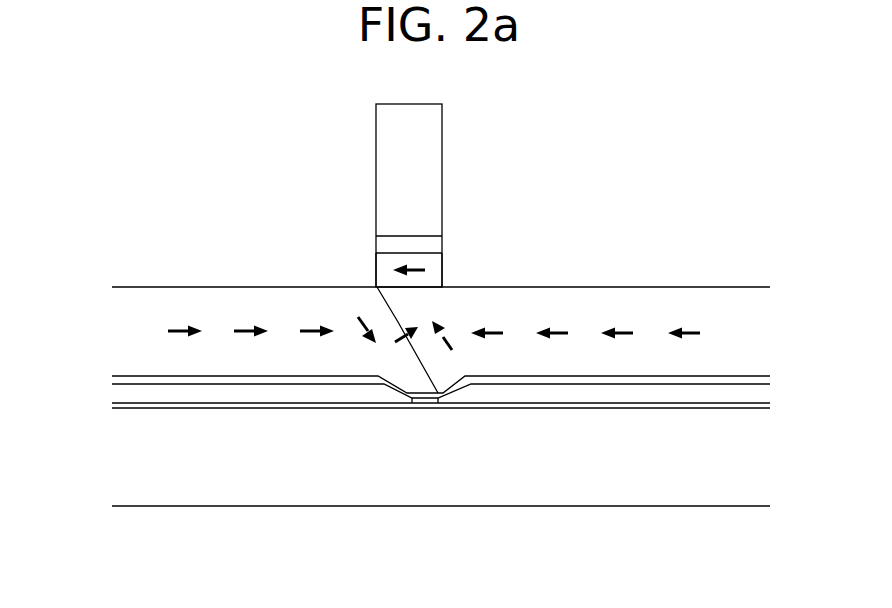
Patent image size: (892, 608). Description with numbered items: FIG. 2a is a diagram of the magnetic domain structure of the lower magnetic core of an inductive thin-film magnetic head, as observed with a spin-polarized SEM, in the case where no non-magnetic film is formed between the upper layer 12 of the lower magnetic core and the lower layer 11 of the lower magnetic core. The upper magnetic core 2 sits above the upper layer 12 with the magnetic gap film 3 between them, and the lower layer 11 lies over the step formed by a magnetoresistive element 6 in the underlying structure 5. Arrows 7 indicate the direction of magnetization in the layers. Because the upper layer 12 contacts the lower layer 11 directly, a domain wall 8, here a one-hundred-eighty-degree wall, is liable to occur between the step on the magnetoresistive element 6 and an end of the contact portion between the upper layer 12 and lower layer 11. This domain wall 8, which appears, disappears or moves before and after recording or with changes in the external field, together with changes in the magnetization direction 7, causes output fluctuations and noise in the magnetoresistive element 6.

The upper magnetic core 2 is at (393, 123).
The magnetic gap film 3 is at (433, 244).
The domain wall 8 is at (398, 318).
The upper layer of the lower magnetic core 12 is at (382, 268).
The lower layer of the lower magnetic core 11 is at (281, 298).
The arrows indicating direction of magnetization 7 is at (562, 332).
The magnetoresistive element 6 is at (410, 404).
The substrate 5 is at (545, 478).